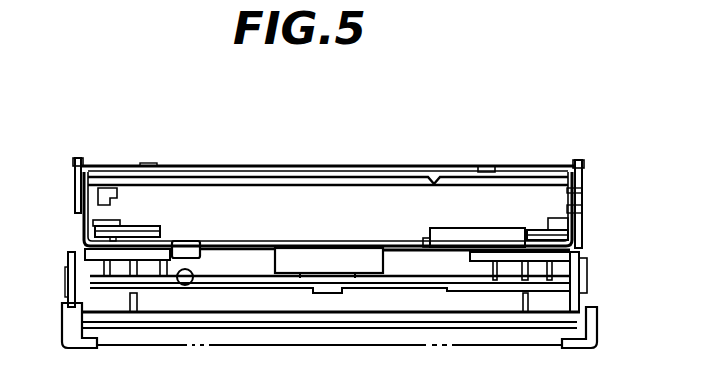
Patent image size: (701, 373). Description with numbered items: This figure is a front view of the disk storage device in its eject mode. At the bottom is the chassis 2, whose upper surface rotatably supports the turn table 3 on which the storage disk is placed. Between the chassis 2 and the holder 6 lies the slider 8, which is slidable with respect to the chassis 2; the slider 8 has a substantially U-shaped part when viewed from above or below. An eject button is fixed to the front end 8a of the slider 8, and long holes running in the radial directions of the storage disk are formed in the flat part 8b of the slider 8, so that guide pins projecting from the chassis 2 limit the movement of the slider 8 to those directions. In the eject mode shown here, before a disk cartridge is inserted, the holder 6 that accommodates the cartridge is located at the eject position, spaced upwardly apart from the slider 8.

The chassis 2 is at (588, 276).
The turn table 3 is at (380, 240).
The holder 6 is at (384, 172).
The slider 8 is at (80, 226).
The front end of the slider 8a is at (185, 240).
The flat part of the slider 8b is at (256, 240).